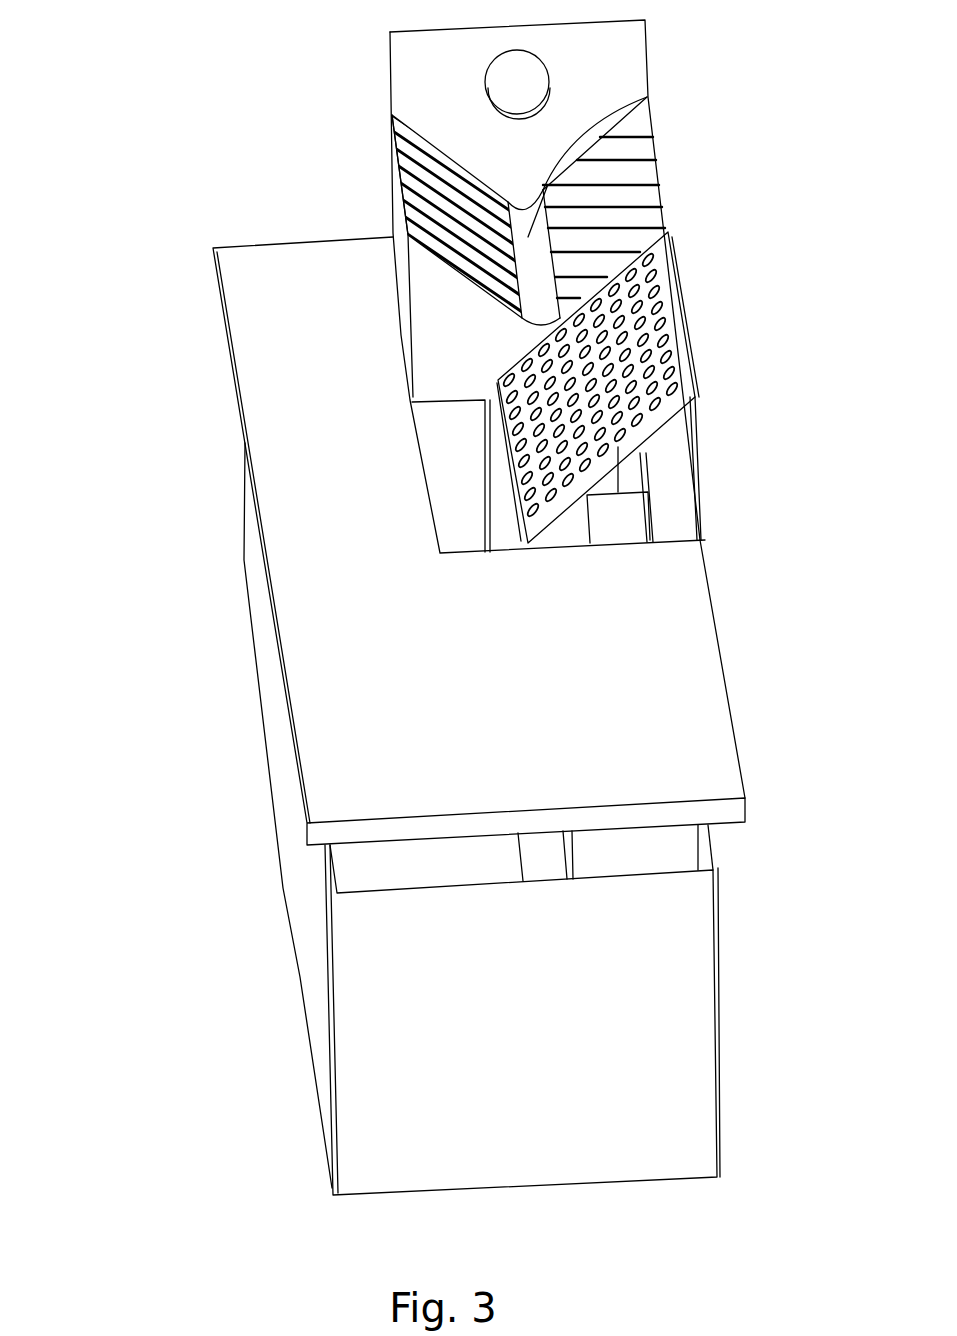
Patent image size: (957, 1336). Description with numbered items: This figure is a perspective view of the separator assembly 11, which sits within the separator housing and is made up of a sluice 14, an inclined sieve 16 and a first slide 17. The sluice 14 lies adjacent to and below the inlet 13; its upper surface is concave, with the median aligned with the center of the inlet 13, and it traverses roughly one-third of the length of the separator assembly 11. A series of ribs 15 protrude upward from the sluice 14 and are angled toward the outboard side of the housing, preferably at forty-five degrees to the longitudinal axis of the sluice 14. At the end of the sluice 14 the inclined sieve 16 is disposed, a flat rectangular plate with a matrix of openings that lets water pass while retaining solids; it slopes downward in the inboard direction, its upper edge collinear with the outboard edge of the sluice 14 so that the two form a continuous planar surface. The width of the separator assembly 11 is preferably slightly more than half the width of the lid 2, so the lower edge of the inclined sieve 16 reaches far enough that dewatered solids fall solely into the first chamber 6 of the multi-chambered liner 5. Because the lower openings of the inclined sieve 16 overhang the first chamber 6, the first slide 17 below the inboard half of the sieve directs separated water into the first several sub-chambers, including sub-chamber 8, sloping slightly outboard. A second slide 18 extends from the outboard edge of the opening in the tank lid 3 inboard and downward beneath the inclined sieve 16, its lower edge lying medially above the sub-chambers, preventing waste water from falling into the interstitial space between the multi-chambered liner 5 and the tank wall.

The lid 2 is at (363, 683).
The tank lid 3 is at (432, 512).
The multi-chambered liner 5 is at (313, 888).
The first chamber 6 is at (463, 507).
The sub-chamber 8 is at (627, 480).
The separator assembly 11 is at (683, 233).
The inlet 13 is at (512, 80).
The sluice 14 is at (648, 97).
The ribs 15 is at (607, 213).
The inclined sieve 16 is at (627, 338).
The first slide 17 is at (567, 530).
The second slide 18 is at (670, 507).